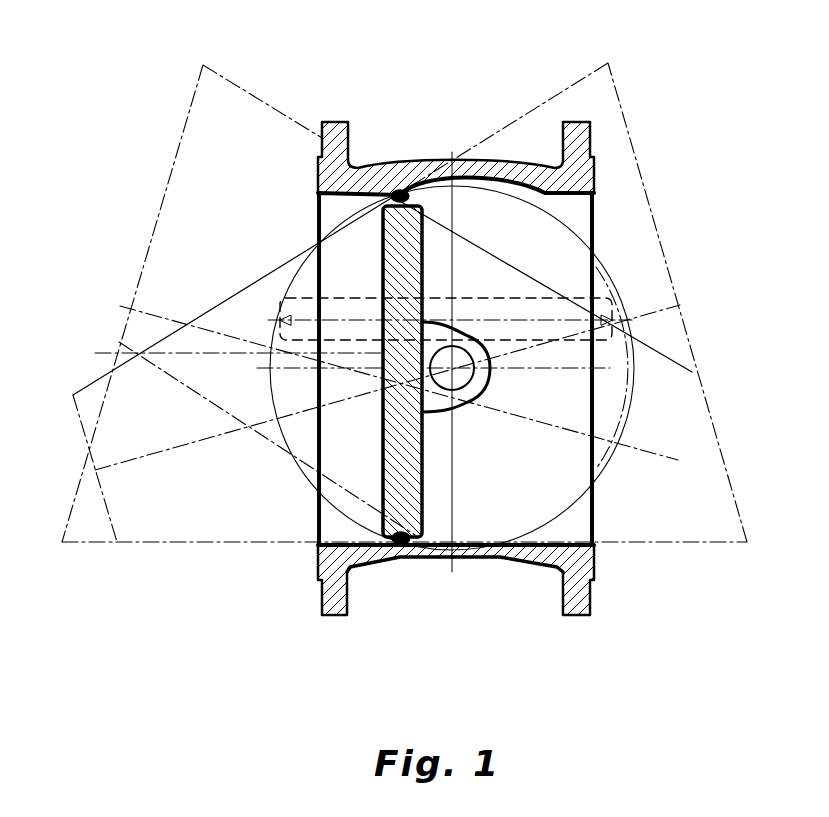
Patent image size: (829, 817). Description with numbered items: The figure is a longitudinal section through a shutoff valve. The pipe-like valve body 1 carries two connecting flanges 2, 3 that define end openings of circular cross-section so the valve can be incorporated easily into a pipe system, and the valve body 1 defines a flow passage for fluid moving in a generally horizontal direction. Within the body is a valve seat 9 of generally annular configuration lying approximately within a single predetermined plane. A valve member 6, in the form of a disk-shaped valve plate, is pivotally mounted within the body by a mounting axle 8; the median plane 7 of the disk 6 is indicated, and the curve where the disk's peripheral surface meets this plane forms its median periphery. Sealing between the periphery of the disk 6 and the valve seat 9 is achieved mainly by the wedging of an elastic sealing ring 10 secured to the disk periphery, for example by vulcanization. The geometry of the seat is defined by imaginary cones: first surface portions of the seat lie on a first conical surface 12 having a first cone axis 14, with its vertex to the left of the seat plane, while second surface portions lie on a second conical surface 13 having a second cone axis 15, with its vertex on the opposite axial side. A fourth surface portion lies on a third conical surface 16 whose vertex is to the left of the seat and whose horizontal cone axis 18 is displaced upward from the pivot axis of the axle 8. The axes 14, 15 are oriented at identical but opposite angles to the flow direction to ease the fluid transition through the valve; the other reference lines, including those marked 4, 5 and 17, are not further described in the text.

The valve body 1 is at (556, 180).
The connecting flange 2 is at (337, 582).
The connecting flange 3 is at (577, 582).
The valve seat 4 is at (392, 195).
The housing wall 5 is at (591, 198).
The valve member 6 is at (395, 462).
The median plane 7 is at (403, 415).
The mounting axle 8 is at (452, 368).
The valve seat 9 is at (398, 190).
The elastic sealing ring 10 is at (402, 541).
The first conical surface 12 is at (242, 290).
The second conical surface 13 is at (493, 247).
The first cone axis 14 is at (158, 452).
The second cone axis 15 is at (625, 450).
The third conical surface 16 is at (183, 382).
The pivot axis line 17 is at (603, 370).
The horizontal cone axis 18 is at (248, 355).